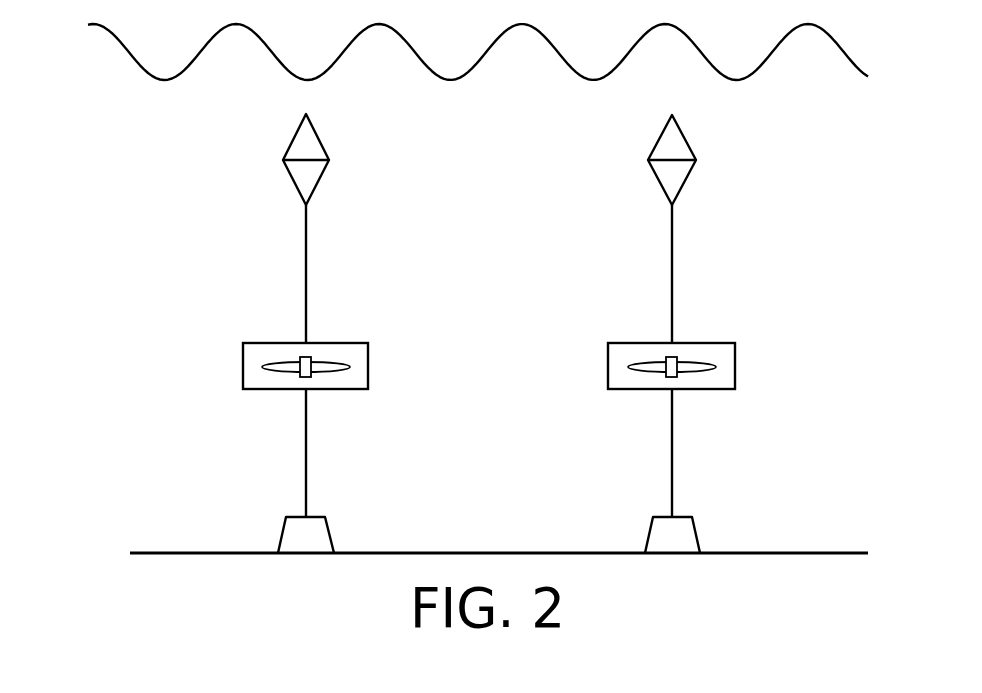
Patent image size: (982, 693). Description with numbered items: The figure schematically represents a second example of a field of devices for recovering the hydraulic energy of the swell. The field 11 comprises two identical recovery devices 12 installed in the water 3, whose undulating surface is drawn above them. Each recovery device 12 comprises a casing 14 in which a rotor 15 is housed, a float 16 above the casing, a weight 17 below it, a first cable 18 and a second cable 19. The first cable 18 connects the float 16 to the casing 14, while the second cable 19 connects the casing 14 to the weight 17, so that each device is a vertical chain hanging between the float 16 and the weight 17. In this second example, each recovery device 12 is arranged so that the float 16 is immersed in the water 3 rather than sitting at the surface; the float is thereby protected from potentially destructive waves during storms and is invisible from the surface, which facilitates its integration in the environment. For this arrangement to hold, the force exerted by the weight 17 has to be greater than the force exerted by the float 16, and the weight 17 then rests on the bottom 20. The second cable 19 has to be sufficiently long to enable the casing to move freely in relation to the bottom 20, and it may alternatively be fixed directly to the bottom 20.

The water 3 is at (161, 144).
The field 11 is at (100, 120).
The recovery device 12 is at (378, 228).
The casing 14 is at (355, 389).
The rotor 15 is at (323, 363).
The float 16 is at (290, 145).
The weight 17 is at (282, 522).
The first cable 18 is at (306, 270).
The second cable 19 is at (305, 478).
The bottom 20 is at (748, 553).